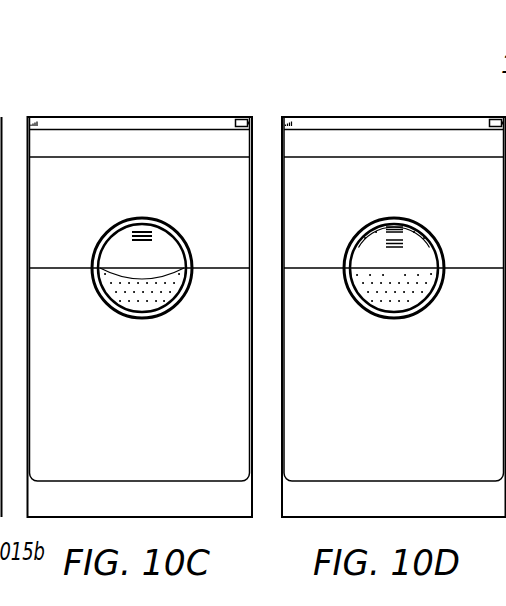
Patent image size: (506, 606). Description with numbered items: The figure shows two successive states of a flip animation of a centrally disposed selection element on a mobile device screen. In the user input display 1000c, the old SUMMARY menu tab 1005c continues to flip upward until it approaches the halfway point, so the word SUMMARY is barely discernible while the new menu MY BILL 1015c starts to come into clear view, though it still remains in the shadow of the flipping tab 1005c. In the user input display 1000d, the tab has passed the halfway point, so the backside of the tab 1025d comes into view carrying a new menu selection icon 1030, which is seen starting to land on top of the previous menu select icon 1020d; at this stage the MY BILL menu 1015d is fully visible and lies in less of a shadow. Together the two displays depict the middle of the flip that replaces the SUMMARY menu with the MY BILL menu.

In FIG. 10C, the user input display 1000c is at (104, 99).
In FIG. 10C, the menu tab 1005c is at (137, 278).
In FIG. 10C, the new menu 1015c is at (140, 303).
In FIG. 10D, the user input display 1000d is at (347, 92).
In FIG. 10D, the new menu 1015d is at (396, 302).
In FIG. 10D, the previous menu select icon 1020d is at (394, 228).
In FIG. 10D, the backside of the tab 1025d is at (372, 253).
In FIG. 10D, the new menu selection icon 1030 is at (398, 248).